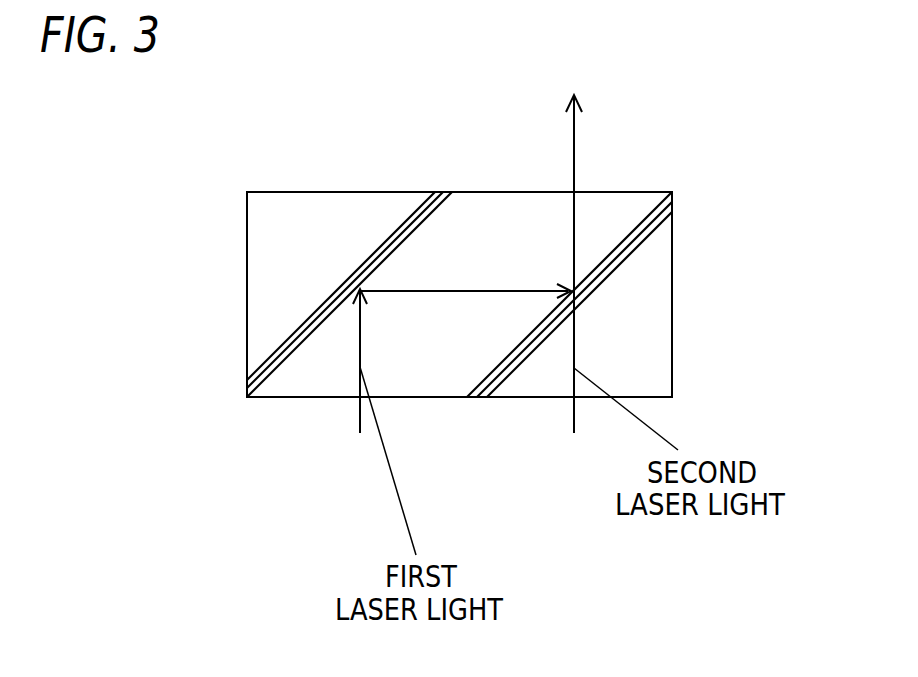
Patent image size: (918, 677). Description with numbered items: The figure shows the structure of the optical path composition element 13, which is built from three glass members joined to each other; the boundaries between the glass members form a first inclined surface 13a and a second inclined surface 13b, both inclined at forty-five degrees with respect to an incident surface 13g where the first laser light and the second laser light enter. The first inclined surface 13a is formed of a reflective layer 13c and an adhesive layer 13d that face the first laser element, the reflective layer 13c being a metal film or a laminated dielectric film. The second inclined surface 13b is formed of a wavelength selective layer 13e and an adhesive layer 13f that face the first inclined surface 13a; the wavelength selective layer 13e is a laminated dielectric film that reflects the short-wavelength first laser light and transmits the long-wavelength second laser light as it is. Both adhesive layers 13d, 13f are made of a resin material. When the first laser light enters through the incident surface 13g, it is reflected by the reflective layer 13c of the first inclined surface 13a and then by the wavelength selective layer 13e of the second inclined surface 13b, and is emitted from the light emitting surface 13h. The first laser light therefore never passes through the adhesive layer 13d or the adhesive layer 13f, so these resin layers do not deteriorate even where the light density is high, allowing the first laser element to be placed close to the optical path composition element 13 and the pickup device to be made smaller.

The optical path composition element 13 is at (308, 217).
The first inclined surface 13a is at (268, 397).
The second inclined surface 13b is at (615, 243).
The reflective layer 13c is at (265, 366).
The adhesive layer 13d is at (293, 338).
The wavelength selective layer 13e is at (508, 372).
The adhesive layer 13f is at (488, 397).
The incident surface 13g is at (303, 397).
The light emitting surface 13h is at (522, 192).